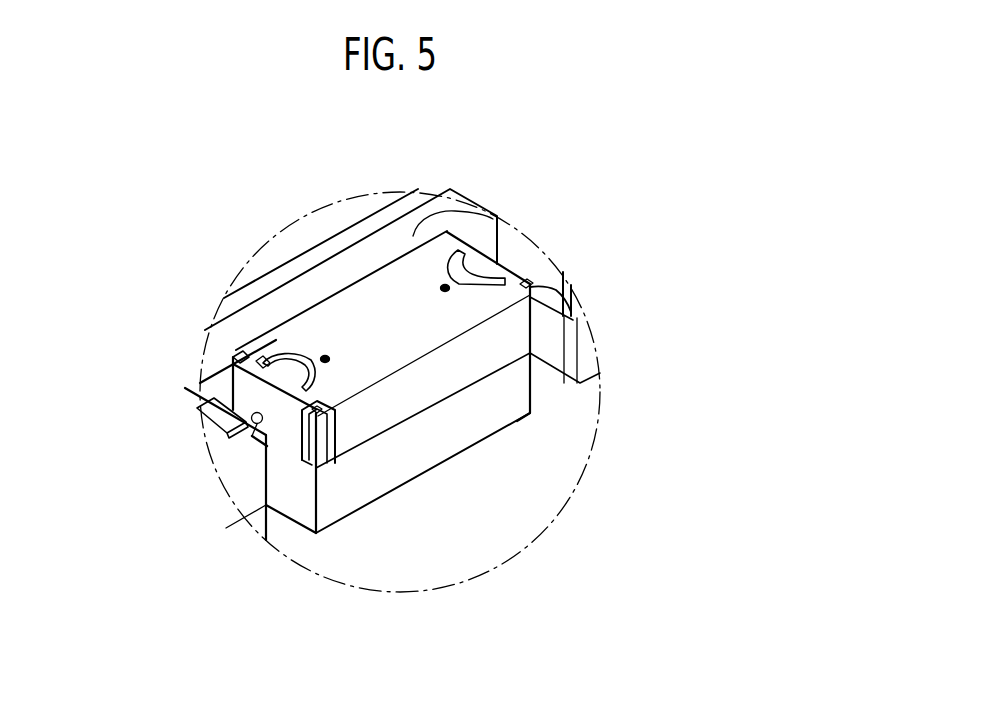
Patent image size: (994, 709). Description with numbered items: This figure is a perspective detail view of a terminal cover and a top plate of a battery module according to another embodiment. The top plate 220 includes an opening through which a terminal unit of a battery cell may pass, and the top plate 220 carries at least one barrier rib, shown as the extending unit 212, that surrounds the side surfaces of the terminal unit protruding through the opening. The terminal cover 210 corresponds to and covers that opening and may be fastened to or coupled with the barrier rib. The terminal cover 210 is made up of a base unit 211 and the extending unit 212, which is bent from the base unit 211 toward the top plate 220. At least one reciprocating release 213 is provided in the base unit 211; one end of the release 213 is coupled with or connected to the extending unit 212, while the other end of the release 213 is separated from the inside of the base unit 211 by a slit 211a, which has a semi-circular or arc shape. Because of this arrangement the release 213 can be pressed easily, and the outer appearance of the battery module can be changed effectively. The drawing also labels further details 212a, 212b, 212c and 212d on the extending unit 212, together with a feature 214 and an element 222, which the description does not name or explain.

The terminal cover 210 is at (246, 332).
The base unit 211 is at (297, 334).
The slit 211a is at (207, 405).
The extending unit 212 is at (575, 558).
The end plate of fixing bracket 212a is at (516, 259).
The front wall of fixing bracket 212b is at (418, 396).
The clip of fixing bracket 212c is at (252, 439).
The flange of fixing bracket 212d is at (535, 243).
The reciprocating release 213 is at (476, 270).
The fastening hole 214 is at (443, 287).
The top plate 220 is at (378, 182).
The base housing 222 is at (347, 493).